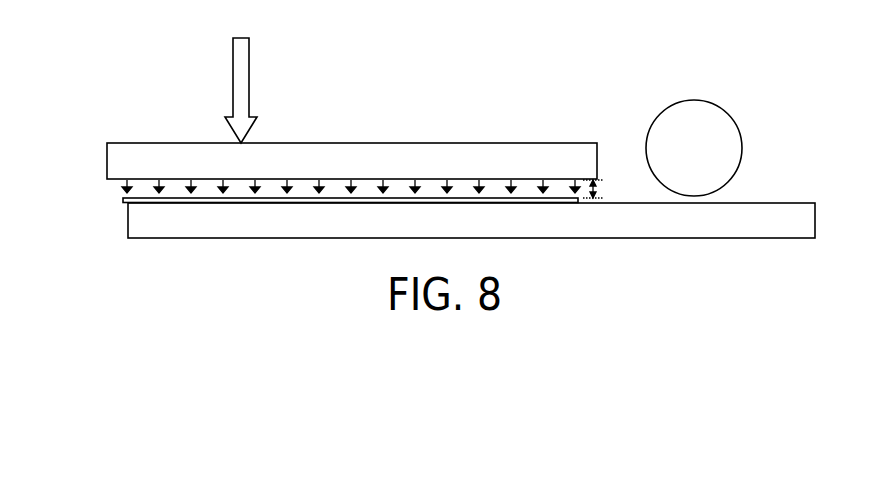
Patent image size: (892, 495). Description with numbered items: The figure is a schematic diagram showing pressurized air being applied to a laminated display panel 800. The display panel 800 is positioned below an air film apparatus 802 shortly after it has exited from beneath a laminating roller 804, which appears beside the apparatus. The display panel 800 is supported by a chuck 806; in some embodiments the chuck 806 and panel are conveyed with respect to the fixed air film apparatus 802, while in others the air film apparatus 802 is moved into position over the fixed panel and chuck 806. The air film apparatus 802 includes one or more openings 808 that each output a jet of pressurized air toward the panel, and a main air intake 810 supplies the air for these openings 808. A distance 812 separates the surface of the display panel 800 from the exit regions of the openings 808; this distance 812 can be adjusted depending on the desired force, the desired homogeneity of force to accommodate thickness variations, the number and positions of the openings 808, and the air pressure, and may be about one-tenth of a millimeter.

The laminated display panel 800 is at (557, 203).
The air film apparatus 802 is at (518, 168).
The laminating roller 804 is at (683, 102).
The chuck 806 is at (723, 231).
The openings 808 is at (123, 183).
The main air intake 810 is at (249, 83).
The distance 812 is at (598, 186).